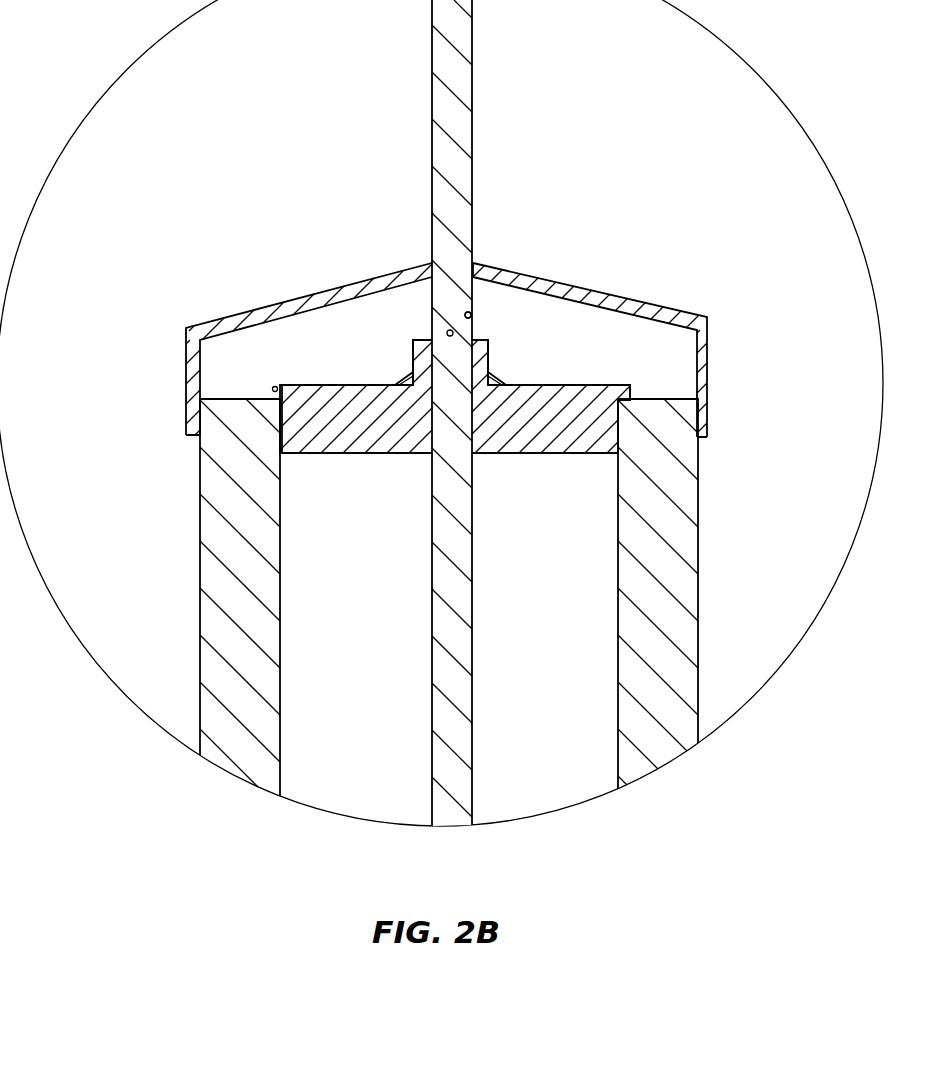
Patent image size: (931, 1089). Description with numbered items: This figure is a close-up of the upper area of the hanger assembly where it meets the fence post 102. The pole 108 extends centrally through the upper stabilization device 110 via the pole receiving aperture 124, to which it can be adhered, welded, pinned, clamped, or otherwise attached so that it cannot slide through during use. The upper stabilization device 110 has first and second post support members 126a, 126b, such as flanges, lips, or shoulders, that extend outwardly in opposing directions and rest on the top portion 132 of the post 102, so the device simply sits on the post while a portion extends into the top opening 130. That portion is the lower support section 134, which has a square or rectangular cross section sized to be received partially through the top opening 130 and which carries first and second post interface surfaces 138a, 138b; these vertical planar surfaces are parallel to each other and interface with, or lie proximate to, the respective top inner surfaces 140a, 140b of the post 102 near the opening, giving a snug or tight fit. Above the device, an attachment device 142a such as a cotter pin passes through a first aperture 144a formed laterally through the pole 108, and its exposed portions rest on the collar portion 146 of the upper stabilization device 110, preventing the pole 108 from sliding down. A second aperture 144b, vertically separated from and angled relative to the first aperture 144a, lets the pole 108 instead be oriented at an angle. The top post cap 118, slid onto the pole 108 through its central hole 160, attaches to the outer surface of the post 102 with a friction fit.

The post 102 is at (227, 547).
The pole 108 is at (458, 80).
The upper stabilization device 110 is at (398, 299).
The top post cap 118 is at (306, 300).
The pole receiving aperture 124 is at (457, 438).
The first post support member 126a is at (322, 392).
The second post support member 126b is at (712, 342).
The top opening 130 is at (345, 609).
The top portion 132 is at (240, 392).
The lower support section 134 is at (554, 440).
The first post interface surface 138a is at (265, 436).
The second post interface surface 138b is at (636, 420).
The top inner surface 140a is at (292, 433).
The top inner surface 140b is at (605, 440).
The attachment device 142a is at (462, 310).
The first aperture 144a is at (449, 325).
The second aperture 144b is at (472, 312).
The collar portion 146 is at (490, 358).
The central hole 160 is at (462, 256).